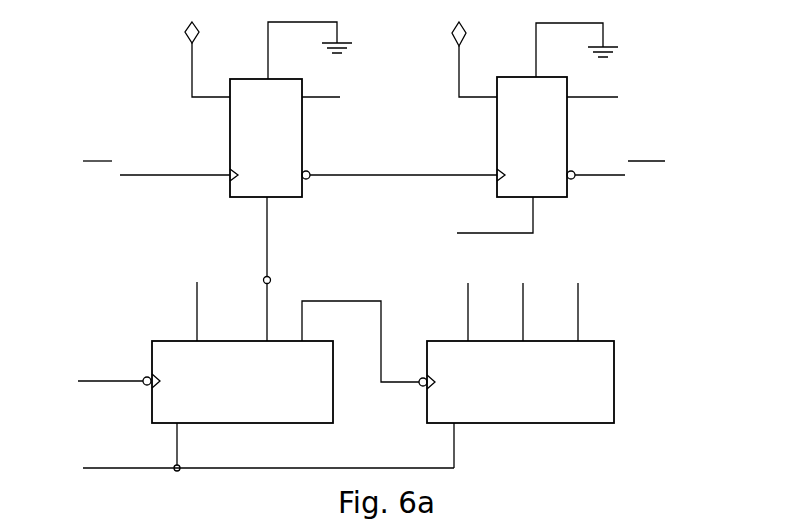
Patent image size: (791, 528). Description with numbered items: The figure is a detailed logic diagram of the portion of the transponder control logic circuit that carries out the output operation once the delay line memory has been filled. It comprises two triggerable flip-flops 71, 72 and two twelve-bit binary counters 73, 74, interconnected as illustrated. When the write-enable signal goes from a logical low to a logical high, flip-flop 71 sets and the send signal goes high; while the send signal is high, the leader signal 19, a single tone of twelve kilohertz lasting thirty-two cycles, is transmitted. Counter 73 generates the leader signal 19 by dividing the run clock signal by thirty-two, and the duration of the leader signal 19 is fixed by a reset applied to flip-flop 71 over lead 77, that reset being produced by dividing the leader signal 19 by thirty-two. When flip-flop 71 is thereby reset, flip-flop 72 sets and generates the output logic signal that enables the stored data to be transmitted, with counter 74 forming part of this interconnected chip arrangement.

The triggerable flip-flop 71 is at (250, 79).
The triggerable flip-flop 72 is at (522, 77).
The 12 bit binary counter 73 is at (228, 370).
The 12 bit binary counter 74 is at (616, 345).
The lead 77 is at (268, 246).
The leader signal S19 19 is at (197, 310).